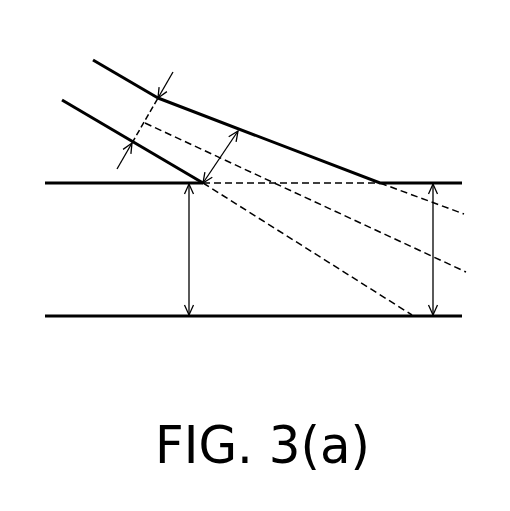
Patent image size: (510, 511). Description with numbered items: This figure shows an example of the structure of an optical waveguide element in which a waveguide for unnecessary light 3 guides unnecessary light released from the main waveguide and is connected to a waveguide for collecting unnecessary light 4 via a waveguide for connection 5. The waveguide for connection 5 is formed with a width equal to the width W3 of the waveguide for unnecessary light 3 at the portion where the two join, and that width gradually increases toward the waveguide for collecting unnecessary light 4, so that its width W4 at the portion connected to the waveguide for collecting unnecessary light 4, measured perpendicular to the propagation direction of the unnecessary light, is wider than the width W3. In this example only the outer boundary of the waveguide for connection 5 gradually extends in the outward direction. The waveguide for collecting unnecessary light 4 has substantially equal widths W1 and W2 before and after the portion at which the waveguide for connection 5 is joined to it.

The waveguide for unnecessary light 3 is at (101, 80).
The waveguide for collecting unnecessary light 4 is at (109, 310).
The waveguide for connection 5 is at (300, 153).
The width of the waveguide for collecting unnecessary light before the connection po W1 is at (190, 267).
The width of the waveguide for collecting unnecessary light after the connection por W2 is at (435, 266).
The width of the waveguide for unnecessary light W3 is at (162, 120).
The width of the waveguide for connection W4 is at (235, 144).